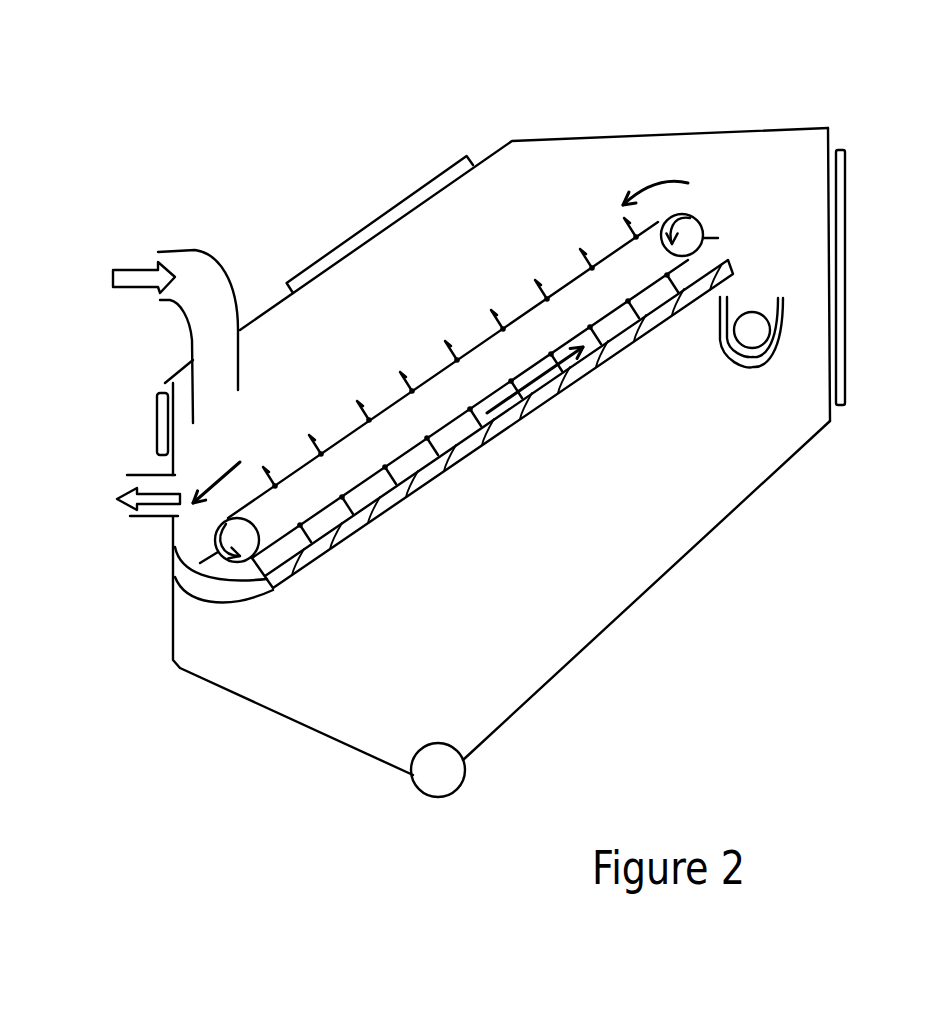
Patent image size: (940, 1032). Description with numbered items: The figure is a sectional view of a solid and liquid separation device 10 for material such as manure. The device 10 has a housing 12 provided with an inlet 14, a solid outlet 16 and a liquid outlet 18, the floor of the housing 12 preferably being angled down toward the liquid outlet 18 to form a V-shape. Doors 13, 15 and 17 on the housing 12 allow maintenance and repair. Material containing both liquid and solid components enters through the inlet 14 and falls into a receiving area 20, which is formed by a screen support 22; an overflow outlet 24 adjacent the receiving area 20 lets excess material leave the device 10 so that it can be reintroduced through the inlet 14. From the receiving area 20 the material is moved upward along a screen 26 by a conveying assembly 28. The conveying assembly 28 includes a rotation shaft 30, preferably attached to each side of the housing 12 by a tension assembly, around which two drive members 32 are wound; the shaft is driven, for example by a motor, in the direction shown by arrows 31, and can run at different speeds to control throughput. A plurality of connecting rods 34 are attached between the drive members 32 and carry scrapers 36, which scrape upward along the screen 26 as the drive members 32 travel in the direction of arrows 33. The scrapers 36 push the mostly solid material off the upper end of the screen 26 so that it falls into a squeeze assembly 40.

The solid and liquid separation device 10 is at (160, 710).
The housing 12 is at (812, 126).
The door 13 is at (430, 193).
The inlet 14 is at (207, 253).
The door 15 is at (845, 214).
The solid outlet 16 is at (807, 323).
The door 17 is at (156, 423).
The liquid outlet 18 is at (466, 778).
The receiving area 20 is at (190, 537).
The screen support 22 is at (203, 590).
The overflow outlet 24 is at (133, 470).
The screen 26 is at (443, 477).
The conveying assembly 28 is at (433, 313).
The rotation shaft 30 is at (697, 217).
The arrows 31 is at (657, 238).
The drive members 32 is at (607, 253).
The arrows 33 is at (237, 460).
The connecting rods 34 is at (487, 407).
The scrapers 36 is at (425, 412).
The squeeze assembly 40 is at (725, 352).